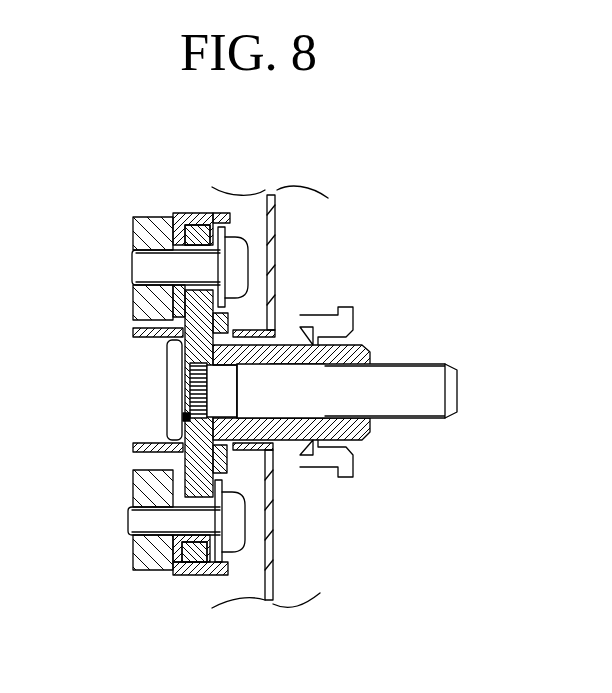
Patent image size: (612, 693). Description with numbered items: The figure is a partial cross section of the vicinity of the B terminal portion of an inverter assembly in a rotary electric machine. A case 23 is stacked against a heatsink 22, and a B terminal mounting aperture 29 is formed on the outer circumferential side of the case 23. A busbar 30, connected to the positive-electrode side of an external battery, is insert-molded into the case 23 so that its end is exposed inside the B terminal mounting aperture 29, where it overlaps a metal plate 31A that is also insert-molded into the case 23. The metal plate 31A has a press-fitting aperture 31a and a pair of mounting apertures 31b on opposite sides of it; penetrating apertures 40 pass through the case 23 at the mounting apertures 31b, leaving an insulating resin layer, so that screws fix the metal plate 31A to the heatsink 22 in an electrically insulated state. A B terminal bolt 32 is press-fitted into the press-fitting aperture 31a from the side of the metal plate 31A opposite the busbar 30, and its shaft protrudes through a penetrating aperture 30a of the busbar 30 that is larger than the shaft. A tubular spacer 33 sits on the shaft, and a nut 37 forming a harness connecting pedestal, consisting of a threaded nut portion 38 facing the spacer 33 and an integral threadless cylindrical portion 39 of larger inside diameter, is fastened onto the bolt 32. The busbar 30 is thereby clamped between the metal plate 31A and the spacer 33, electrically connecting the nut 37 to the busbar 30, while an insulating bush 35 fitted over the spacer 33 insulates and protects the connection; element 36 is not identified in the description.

The heatsink 22 is at (147, 230).
The case 23 is at (190, 213).
The B terminal mounting aperture 29 is at (147, 345).
The busbar 30 is at (233, 464).
The penetrating aperture 30a is at (182, 346).
The press-fitting aperture 31a is at (182, 437).
The metal plate 31A is at (185, 453).
The mounting apertures 31b is at (192, 563).
The B terminal bolt 32 is at (460, 368).
The spacer 33 is at (268, 313).
The insulating bush 35 is at (355, 477).
The bearing cap 36 is at (245, 517).
The nut 37 is at (329, 310).
The nut portion 38 is at (298, 343).
The threadless cylindrical portion 39 is at (362, 345).
The penetrating apertures 40 is at (182, 527).